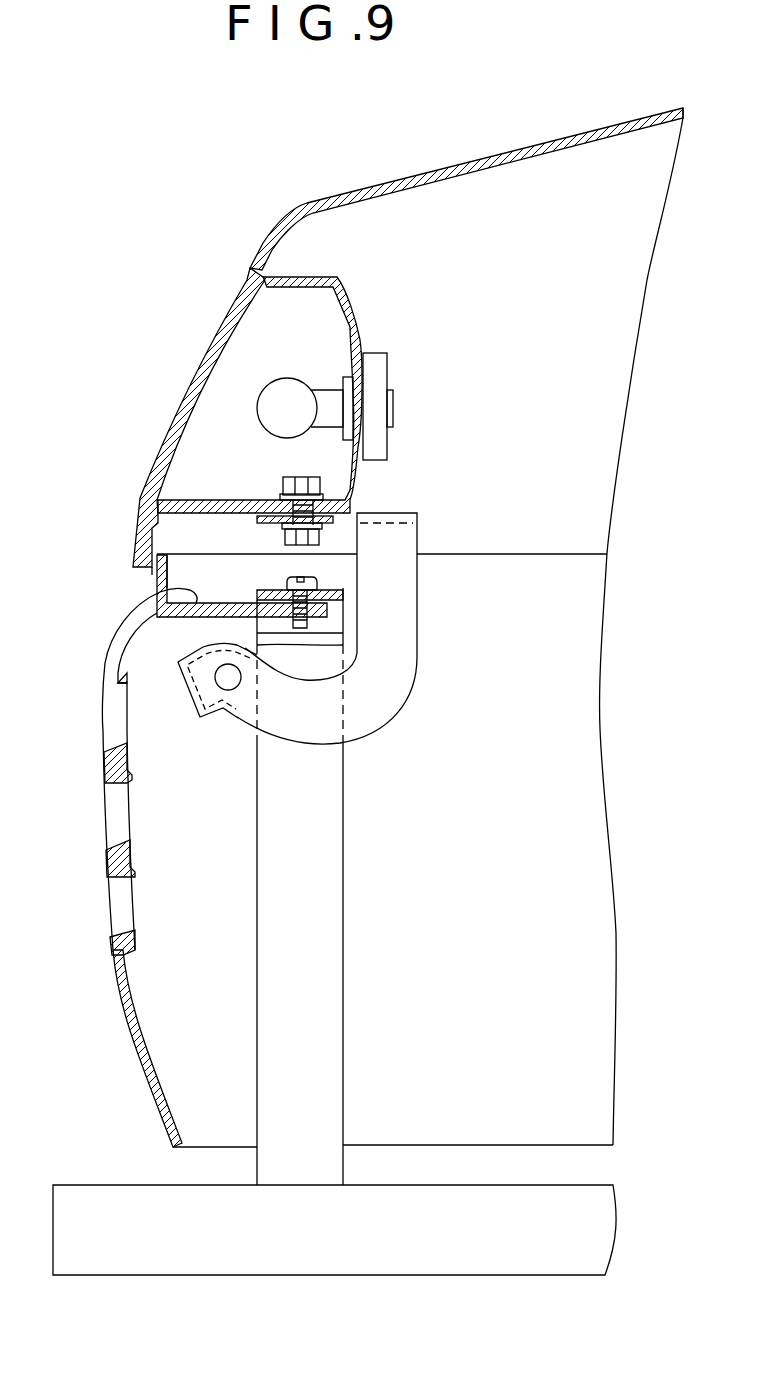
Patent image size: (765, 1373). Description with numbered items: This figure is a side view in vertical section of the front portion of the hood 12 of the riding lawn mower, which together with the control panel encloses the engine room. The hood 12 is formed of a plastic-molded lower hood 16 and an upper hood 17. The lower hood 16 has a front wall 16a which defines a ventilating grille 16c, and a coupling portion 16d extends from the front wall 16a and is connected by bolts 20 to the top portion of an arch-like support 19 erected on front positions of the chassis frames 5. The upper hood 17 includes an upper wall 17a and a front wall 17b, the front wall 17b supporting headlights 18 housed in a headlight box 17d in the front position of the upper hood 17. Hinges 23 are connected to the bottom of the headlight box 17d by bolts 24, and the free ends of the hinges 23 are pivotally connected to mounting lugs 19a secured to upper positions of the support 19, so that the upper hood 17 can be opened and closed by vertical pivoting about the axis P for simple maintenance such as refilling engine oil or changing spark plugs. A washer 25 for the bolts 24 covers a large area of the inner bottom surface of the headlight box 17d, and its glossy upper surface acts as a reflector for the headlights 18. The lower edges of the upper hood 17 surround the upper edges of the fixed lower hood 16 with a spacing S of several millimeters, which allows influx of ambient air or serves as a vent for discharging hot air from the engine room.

The chassis frames 5 is at (455, 1265).
The hood 12 is at (522, 140).
The lower hood 16 is at (143, 867).
The front wall 16a is at (138, 1043).
The ventilating grille 16c is at (118, 904).
The coupling portion 16d is at (157, 597).
The upper hood 17 is at (408, 329).
The upper wall 17a is at (442, 170).
The front wall 17b is at (262, 240).
The headlight box 17d is at (342, 300).
The headlights 18 is at (287, 388).
The arch-like support 19 is at (292, 914).
The mounting lugs 19a is at (202, 726).
The bolts 20 is at (288, 582).
The hinges 23 is at (405, 663).
The bolts 24 is at (330, 483).
The washer 25 is at (258, 500).
The axis P is at (226, 679).
The spacing S is at (150, 573).